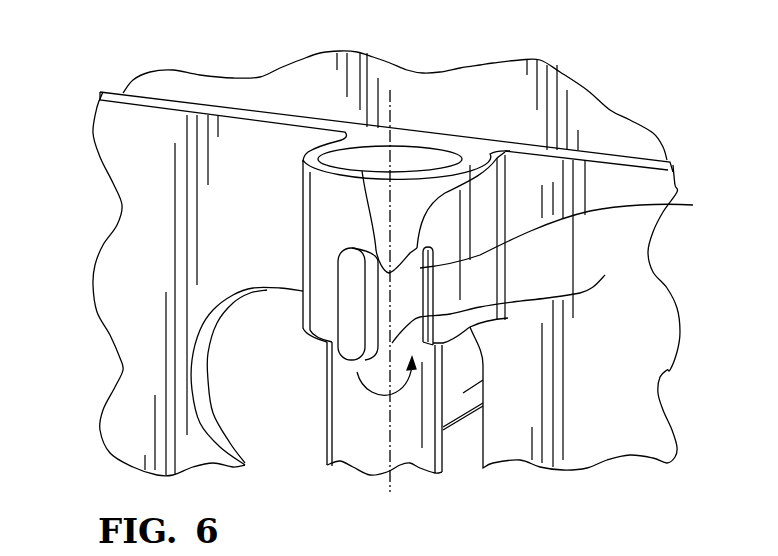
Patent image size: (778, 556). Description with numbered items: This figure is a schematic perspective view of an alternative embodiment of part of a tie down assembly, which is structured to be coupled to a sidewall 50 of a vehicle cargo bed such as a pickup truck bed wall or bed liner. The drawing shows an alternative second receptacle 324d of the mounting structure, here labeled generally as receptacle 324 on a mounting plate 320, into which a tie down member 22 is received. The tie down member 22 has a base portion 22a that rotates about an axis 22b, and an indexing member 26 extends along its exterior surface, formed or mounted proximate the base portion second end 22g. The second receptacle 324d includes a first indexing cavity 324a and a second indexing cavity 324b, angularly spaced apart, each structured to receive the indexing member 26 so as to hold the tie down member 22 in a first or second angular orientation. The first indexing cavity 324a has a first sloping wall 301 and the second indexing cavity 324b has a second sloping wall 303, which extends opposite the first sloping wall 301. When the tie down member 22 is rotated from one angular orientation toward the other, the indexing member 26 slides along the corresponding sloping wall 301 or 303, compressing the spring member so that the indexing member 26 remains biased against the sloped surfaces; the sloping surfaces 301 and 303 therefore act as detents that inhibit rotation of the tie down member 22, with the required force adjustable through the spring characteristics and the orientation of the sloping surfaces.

The tie down member 22 is at (318, 443).
The base portion 22a is at (373, 418).
The axis 22b is at (393, 160).
The base portion second end 22g is at (488, 324).
The indexing member 26 is at (343, 288).
The sidewall 50 is at (580, 110).
The first sloping wall 301 is at (363, 165).
The second sloping wall 303 is at (573, 233).
The plate 320 is at (83, 152).
The retaining bracket 324 is at (637, 303).
The first indexing cavity 324a is at (360, 248).
The second indexing cavity 324b is at (498, 200).
The second receptacle 324d is at (428, 192).